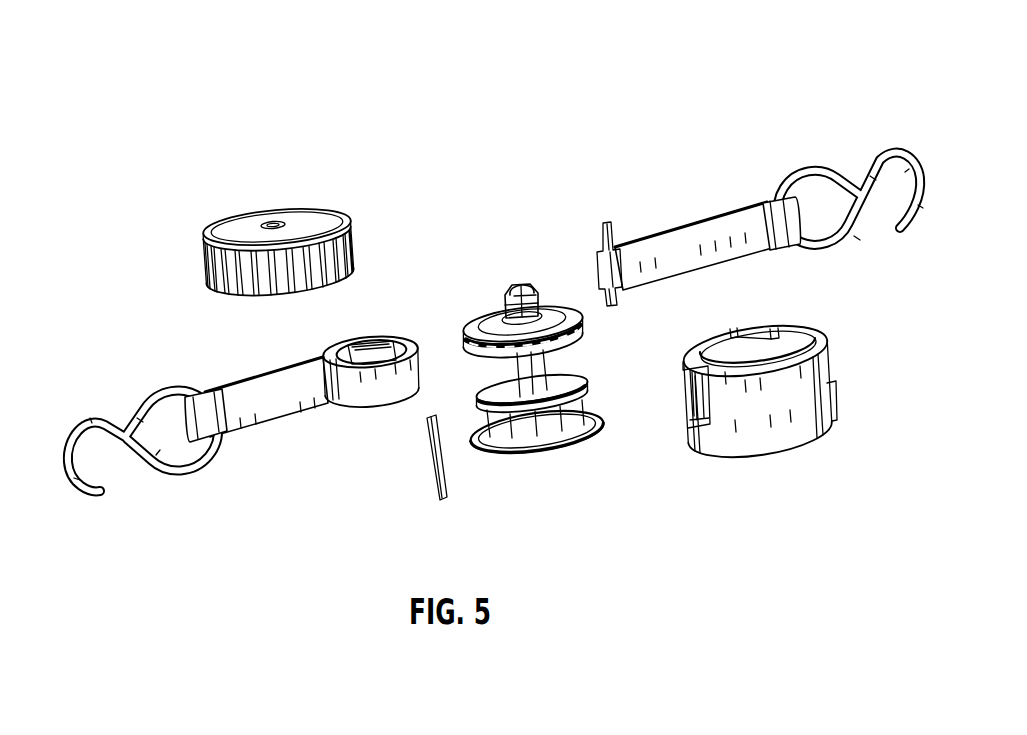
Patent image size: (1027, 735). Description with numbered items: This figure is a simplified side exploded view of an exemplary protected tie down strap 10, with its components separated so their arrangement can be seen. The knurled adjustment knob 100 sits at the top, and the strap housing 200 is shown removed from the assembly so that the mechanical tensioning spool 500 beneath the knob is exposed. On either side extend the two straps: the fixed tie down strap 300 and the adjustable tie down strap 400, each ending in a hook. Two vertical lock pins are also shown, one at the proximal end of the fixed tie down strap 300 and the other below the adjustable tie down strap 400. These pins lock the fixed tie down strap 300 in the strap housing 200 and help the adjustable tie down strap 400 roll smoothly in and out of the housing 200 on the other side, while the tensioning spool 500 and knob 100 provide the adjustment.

The protected tie down strap 10 is at (106, 35).
The knurled adjustment knob 100 is at (280, 200).
The strap housing 200 is at (768, 503).
The fixed tie down strap 300 is at (704, 190).
The adjustable tie down strap 400 is at (250, 488).
The mechanical tensioning spool 500 is at (500, 268).